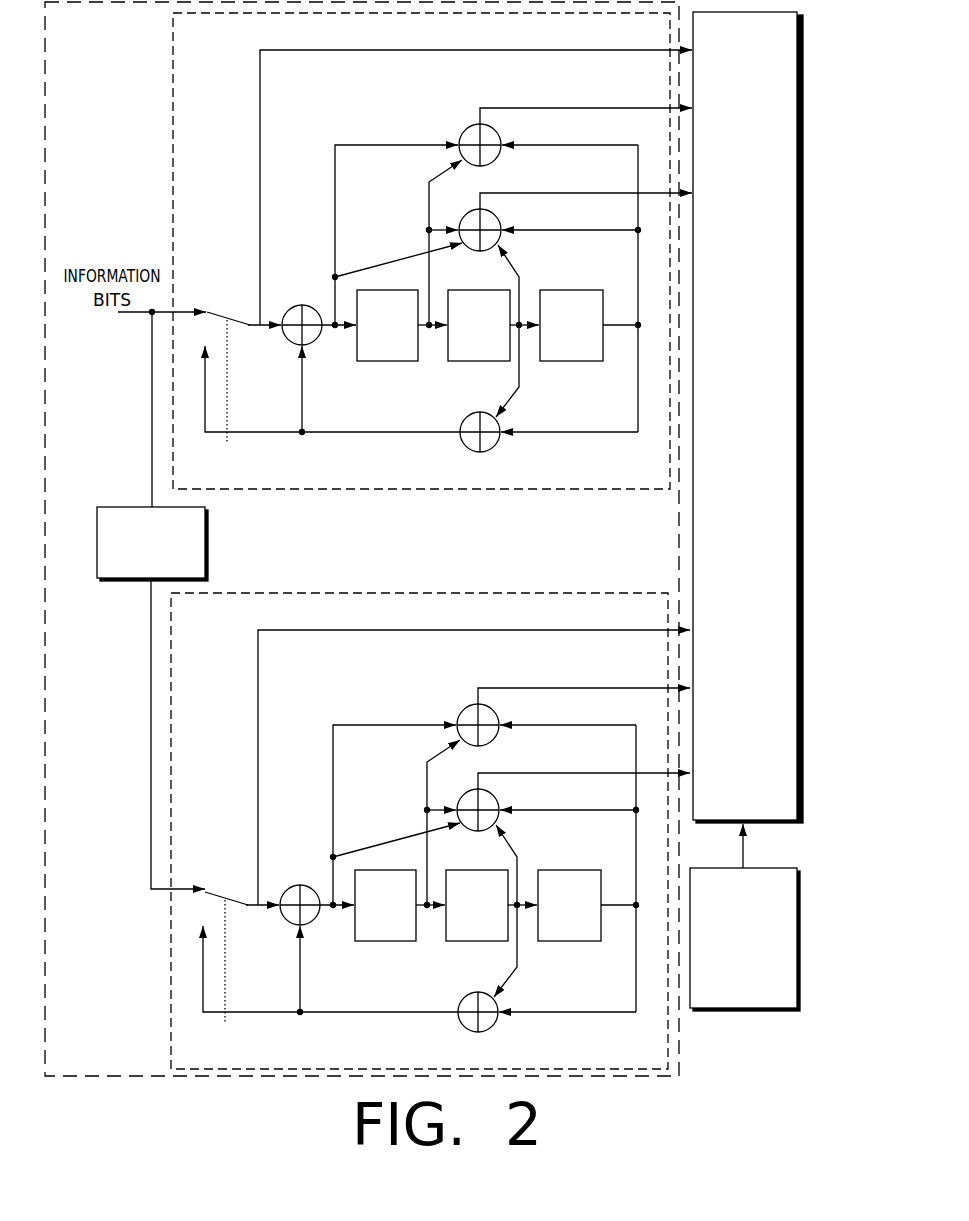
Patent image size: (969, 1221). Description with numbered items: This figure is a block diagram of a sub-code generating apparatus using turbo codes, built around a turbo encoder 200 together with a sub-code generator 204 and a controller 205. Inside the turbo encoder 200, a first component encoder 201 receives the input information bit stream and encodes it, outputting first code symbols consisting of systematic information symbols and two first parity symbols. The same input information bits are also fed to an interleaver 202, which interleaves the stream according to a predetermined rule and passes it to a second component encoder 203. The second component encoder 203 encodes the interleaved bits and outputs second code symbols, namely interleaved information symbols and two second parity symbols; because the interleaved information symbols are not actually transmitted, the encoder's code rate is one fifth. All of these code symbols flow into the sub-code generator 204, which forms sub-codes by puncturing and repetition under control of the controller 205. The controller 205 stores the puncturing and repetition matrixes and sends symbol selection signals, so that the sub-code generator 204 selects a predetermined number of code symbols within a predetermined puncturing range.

The turbo encoder 200 is at (47, 170).
The first component encoder 201 is at (173, 112).
The interleaver 202 is at (205, 541).
The second component encoder 203 is at (508, 596).
The sub-code generator 204 is at (692, 535).
The controller 205 is at (725, 1010).